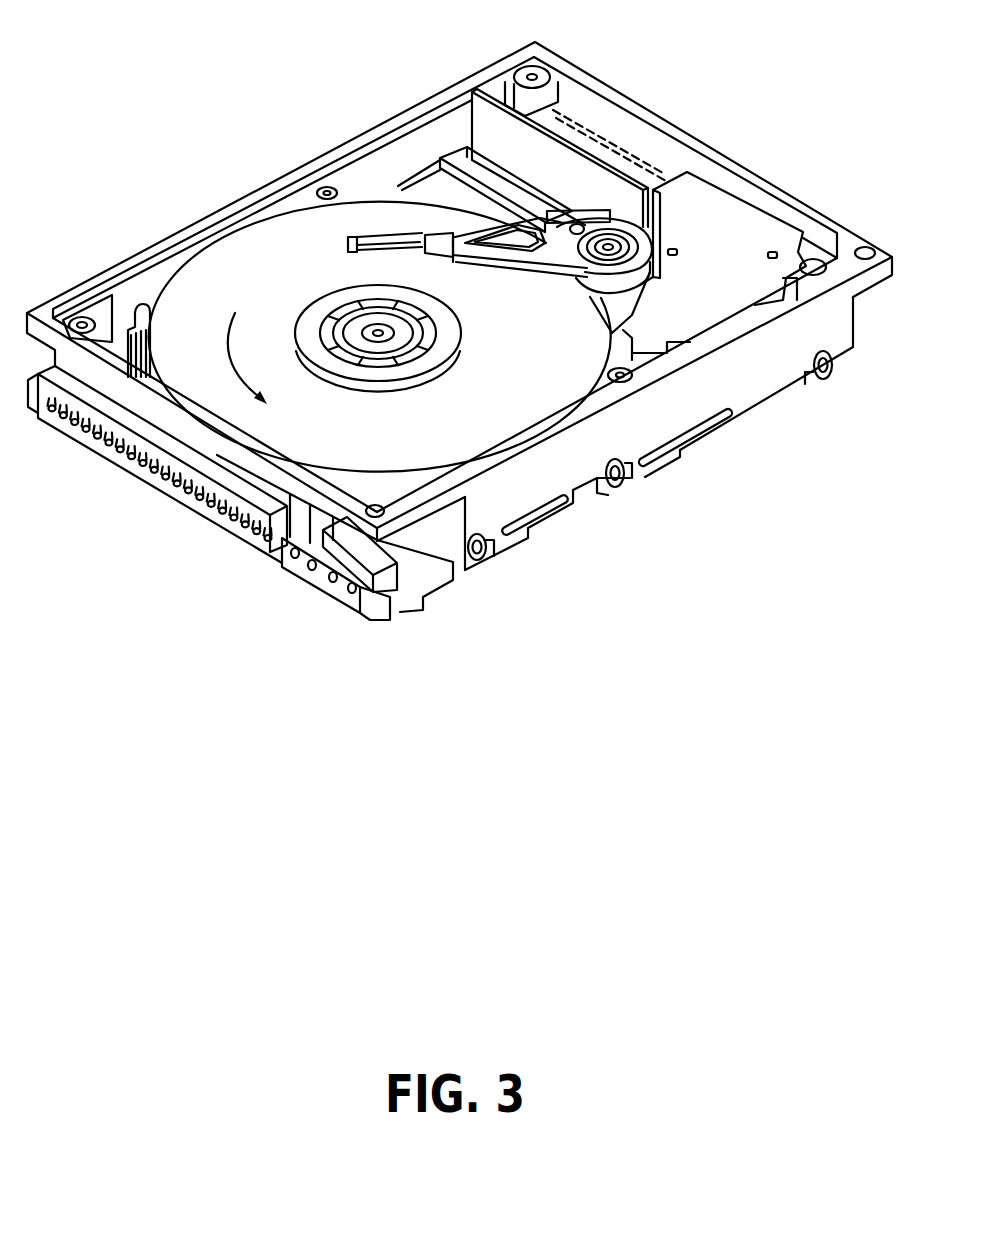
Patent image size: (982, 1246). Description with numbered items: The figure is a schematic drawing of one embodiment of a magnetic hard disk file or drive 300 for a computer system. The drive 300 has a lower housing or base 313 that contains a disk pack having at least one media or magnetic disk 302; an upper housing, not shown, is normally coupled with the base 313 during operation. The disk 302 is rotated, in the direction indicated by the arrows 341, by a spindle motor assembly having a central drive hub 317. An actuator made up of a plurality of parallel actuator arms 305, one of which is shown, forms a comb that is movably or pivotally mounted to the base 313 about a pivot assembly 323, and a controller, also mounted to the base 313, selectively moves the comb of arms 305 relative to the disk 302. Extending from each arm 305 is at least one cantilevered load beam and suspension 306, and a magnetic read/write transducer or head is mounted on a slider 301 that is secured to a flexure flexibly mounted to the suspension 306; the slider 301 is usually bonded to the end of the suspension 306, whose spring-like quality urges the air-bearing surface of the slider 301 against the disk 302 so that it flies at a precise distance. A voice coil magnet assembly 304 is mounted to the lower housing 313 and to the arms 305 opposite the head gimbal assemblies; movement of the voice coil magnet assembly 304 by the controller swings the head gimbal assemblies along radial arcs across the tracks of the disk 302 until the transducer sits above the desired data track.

The hard disk drive 300 is at (284, 70).
The slider 301 is at (350, 236).
The magnetic disk 302 is at (237, 263).
The voice coil magnet assembly 304 is at (728, 210).
The actuator arm 305 is at (503, 257).
The load beam and suspension 306 is at (407, 242).
The base 313 is at (755, 395).
The central drive hub 317 is at (378, 340).
The pivot assembly 323 is at (603, 250).
The arrows 341 is at (226, 358).